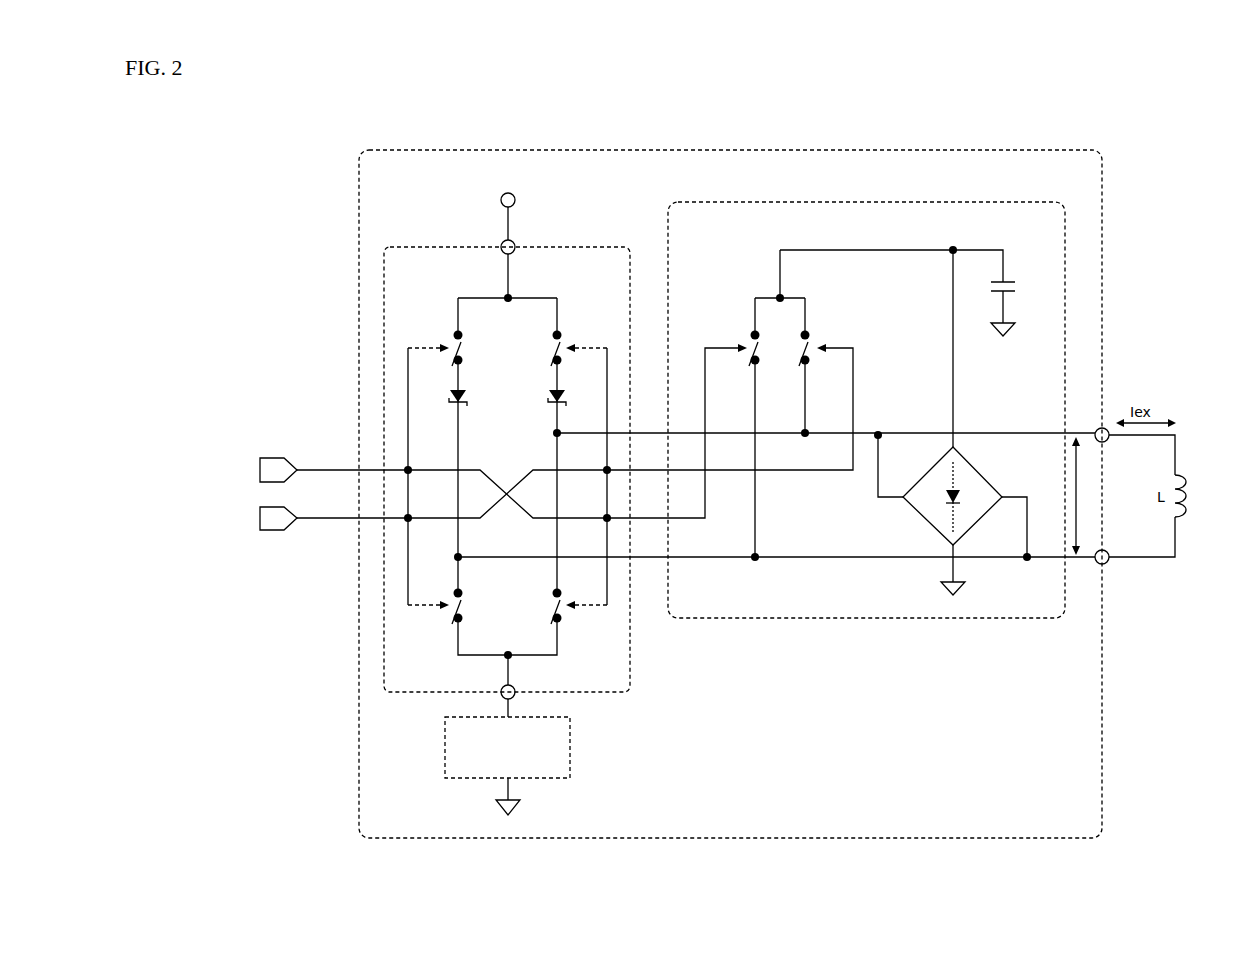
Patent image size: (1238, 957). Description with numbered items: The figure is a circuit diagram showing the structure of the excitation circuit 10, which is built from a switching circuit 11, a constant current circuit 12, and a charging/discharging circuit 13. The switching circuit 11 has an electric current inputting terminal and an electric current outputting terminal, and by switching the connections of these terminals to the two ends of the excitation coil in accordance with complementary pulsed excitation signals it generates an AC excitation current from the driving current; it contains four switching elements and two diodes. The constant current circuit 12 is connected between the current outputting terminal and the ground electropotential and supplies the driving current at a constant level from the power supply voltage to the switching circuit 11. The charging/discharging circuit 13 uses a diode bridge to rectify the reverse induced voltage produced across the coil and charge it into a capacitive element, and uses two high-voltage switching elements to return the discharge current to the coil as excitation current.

The excitation circuit 10 is at (415, 152).
The switching circuit 11 is at (440, 250).
The constant current circuit 12 is at (575, 747).
The charging/discharging circuit 13 is at (718, 200).